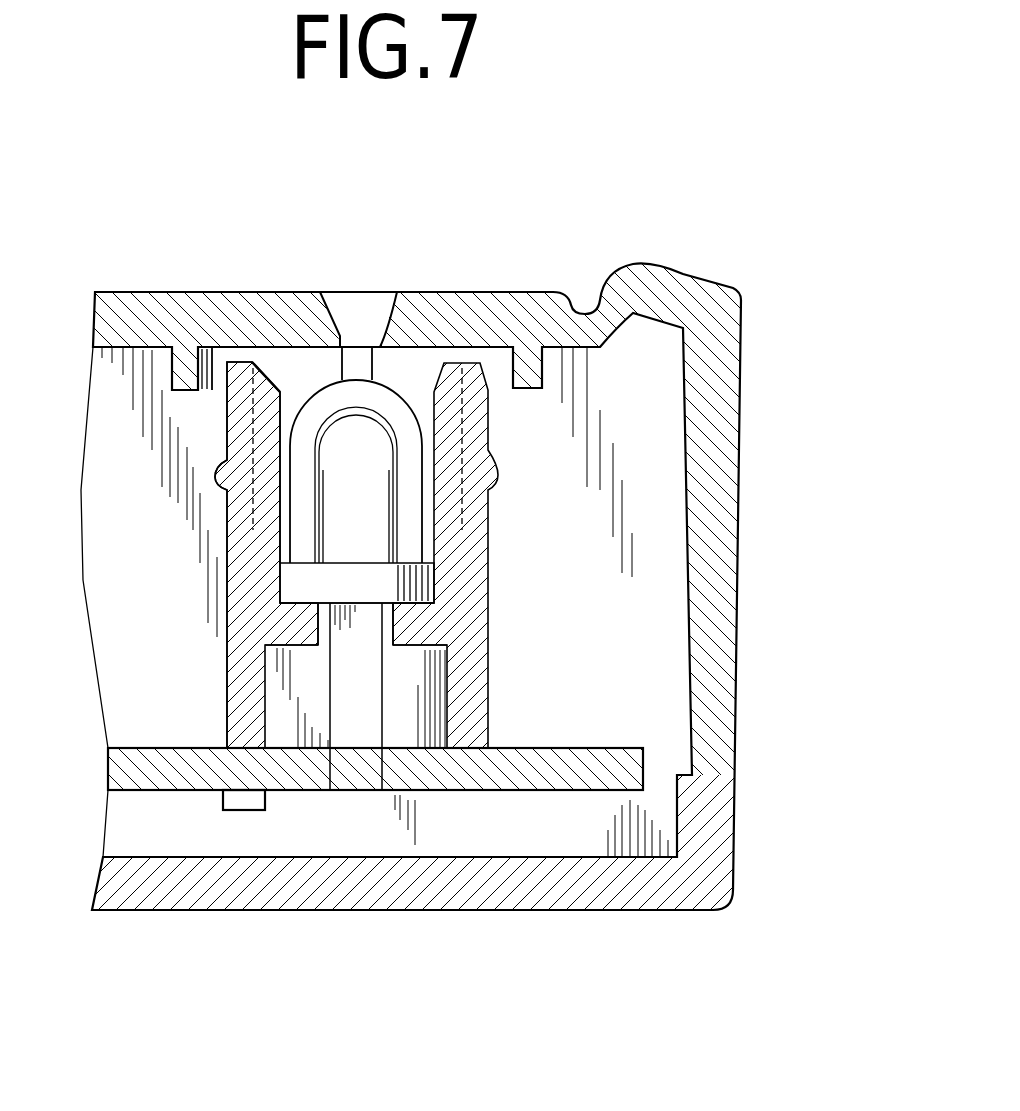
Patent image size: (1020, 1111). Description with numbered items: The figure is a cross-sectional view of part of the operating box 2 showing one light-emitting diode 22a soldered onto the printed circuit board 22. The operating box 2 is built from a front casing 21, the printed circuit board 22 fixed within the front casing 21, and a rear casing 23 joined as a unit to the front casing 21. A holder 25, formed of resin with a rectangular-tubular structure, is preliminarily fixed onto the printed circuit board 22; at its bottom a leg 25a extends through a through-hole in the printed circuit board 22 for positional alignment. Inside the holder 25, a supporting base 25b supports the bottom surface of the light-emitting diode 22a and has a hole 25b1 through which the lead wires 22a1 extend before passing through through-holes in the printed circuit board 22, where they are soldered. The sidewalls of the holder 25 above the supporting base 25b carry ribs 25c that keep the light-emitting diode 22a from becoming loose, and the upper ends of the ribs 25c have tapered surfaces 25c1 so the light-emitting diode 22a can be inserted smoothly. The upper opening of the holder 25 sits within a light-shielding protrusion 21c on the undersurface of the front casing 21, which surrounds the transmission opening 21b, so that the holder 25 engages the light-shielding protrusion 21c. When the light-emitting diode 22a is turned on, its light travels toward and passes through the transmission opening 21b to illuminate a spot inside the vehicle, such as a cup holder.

The operating box 2 is at (744, 570).
The front casing 21 is at (689, 273).
The transmission opening 21b is at (375, 345).
The light-shielding protrusion 21c is at (541, 381).
The printed circuit board 22 is at (643, 770).
The light-emitting diode 22a is at (383, 521).
The lead wire 22a1 is at (383, 710).
The rear casing 23 is at (697, 880).
The holder 25 is at (222, 655).
The leg 25a is at (243, 802).
The supporting base 25b is at (400, 645).
The hole 25b1 is at (318, 640).
The rib 25c is at (235, 503).
The tapered surface 25c1 is at (283, 370).